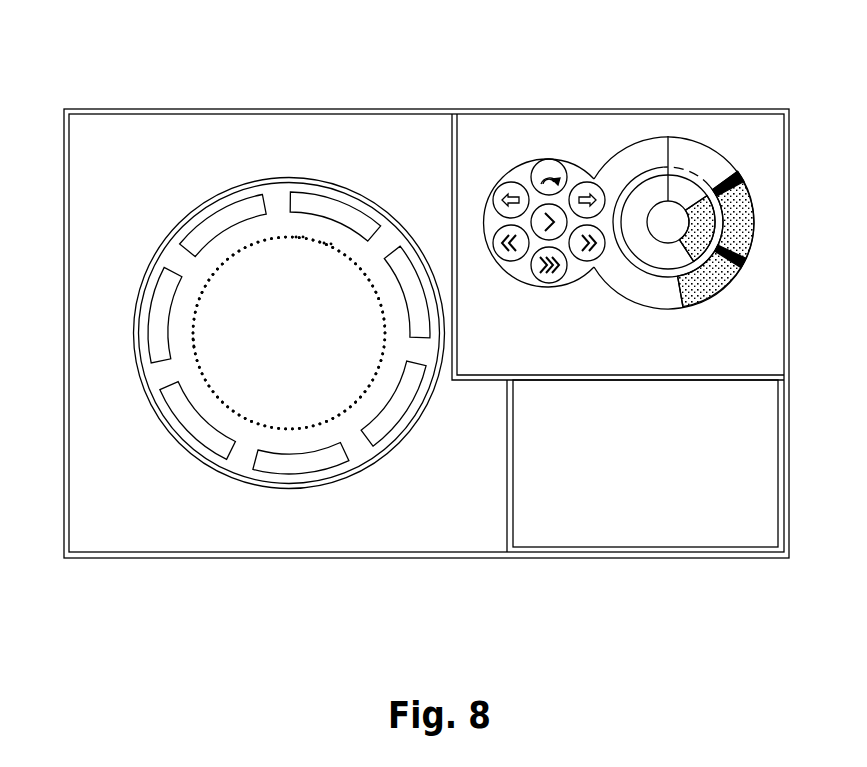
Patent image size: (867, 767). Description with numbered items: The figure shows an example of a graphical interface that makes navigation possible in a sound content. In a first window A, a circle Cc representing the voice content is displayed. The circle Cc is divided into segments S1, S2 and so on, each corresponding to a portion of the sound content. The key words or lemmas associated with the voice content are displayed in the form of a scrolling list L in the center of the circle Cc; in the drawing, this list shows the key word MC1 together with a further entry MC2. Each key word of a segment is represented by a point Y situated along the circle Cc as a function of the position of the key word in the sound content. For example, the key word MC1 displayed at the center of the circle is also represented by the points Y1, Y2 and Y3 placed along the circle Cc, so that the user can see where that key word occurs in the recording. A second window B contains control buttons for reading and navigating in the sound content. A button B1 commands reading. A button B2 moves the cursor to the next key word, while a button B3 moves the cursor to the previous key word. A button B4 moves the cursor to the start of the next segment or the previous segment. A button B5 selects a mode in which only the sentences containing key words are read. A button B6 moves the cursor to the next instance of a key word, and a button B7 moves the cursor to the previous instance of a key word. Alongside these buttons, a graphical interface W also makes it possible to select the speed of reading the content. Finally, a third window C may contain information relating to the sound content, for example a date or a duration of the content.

The first window A is at (131, 147).
The circle Cc is at (190, 218).
The segment S1 is at (320, 200).
The segment S2 is at (410, 270).
The point Y is at (272, 241).
The point Y1 is at (300, 242).
The point Y2 is at (328, 244).
The point Y3 is at (195, 343).
The key word MC1 is at (296, 389).
The second machine cycle indication MC2 is at (296, 357).
The scrolling list L is at (313, 409).
The second window B is at (735, 338).
The button B1 is at (542, 210).
The button B2 is at (606, 255).
The button B3 is at (500, 255).
The button B4 is at (549, 285).
The button B5 is at (547, 158).
The button B6 is at (577, 175).
The button B7 is at (493, 185).
The graphical interface W is at (645, 140).
The information panel C is at (679, 487).